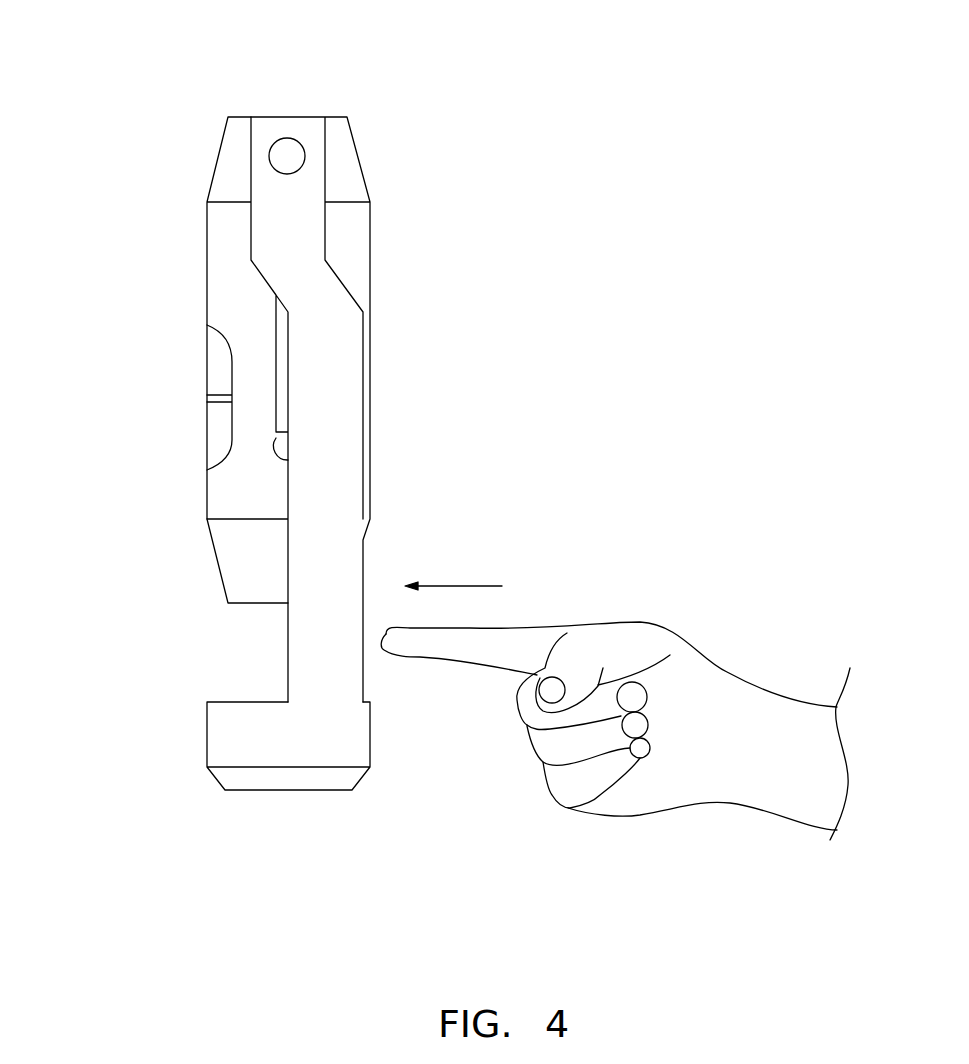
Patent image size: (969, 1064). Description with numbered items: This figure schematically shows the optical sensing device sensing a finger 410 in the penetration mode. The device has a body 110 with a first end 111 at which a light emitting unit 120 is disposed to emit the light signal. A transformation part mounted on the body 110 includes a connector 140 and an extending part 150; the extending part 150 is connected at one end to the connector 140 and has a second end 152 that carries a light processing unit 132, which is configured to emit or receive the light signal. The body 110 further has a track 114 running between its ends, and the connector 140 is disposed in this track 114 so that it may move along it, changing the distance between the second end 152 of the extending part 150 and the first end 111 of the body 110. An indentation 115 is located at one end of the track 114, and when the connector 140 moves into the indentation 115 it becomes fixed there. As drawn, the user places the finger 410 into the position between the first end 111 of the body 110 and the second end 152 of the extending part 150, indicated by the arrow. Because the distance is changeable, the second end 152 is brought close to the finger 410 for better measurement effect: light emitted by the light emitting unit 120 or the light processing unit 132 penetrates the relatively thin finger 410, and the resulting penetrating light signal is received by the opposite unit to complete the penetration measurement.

The body 110 is at (230, 275).
The track 114 is at (282, 347).
The indentation 115 is at (287, 448).
The connector 140 is at (288, 150).
The extending part 150 is at (332, 353).
The first end 111 is at (180, 572).
The light emitting unit 120 is at (257, 607).
The second end 152 is at (206, 736).
The light processing unit 132 is at (223, 702).
The finger 410 is at (725, 688).